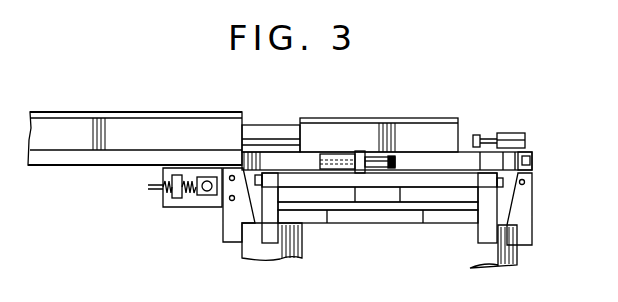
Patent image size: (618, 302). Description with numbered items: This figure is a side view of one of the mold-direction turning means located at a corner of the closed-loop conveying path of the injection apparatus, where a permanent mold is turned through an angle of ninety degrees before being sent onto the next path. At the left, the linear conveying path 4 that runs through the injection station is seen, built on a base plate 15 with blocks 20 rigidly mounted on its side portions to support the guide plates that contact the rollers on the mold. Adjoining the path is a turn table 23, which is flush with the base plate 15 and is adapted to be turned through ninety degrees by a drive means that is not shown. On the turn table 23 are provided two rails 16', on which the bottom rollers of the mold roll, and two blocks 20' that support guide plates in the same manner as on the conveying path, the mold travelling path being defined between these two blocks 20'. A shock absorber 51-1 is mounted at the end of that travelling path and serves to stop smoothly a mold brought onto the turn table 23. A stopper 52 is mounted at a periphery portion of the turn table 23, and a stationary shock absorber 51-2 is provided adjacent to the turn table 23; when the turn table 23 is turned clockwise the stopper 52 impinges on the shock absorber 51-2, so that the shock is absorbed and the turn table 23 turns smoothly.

The linear conveying path 4 is at (74, 110).
The blocks 20 is at (135, 125).
The base plate 15 is at (93, 165).
The rails 16' is at (273, 115).
The shock absorber 51-2 is at (335, 157).
The blocks 20' is at (379, 112).
The turn table 23 is at (427, 160).
The shock absorber 51-1 is at (512, 137).
The stopper 52 is at (533, 157).